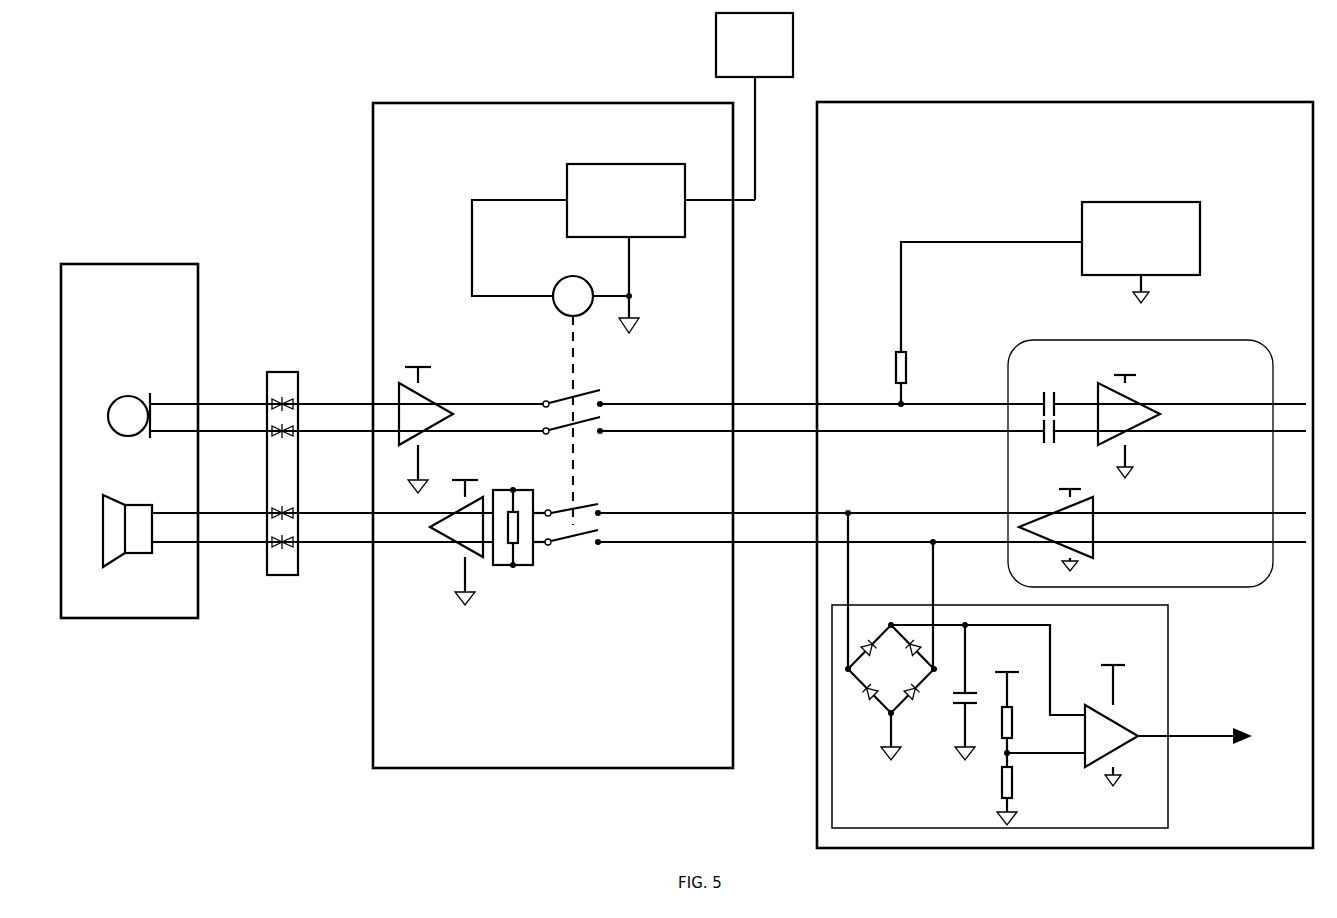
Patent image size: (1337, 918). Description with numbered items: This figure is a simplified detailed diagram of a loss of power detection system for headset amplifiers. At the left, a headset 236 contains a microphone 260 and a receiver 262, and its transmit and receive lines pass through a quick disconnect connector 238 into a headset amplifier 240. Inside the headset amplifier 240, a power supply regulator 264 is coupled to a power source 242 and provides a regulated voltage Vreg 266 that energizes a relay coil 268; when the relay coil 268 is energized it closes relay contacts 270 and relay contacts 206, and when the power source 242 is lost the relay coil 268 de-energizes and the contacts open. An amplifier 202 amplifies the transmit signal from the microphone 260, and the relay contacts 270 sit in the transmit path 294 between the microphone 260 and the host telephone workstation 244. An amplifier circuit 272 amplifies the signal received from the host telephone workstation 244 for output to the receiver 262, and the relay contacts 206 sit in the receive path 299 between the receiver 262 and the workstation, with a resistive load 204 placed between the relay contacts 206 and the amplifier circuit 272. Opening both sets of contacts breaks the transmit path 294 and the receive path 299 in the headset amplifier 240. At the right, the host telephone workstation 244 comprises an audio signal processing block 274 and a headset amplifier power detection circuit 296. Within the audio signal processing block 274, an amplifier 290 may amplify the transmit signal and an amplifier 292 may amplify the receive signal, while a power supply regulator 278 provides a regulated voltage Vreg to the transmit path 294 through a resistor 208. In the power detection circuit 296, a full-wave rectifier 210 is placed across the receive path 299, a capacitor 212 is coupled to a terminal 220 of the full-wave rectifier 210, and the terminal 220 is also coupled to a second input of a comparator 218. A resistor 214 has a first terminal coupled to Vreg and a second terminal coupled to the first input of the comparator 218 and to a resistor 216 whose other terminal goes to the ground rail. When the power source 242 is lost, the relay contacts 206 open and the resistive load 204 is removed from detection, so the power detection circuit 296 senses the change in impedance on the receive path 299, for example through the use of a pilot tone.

The headset 236 is at (129, 441).
The microphone 260 is at (141, 399).
The receiver 262 is at (140, 519).
The quick disconnect connector 238 is at (298, 445).
The headset amplifier 240 is at (553, 435).
The power source 242 is at (754, 106).
The power supply regulator 264 is at (661, 248).
The regulated voltage Vreg 266 is at (519, 238).
The relay coil 268 is at (585, 385).
The amplifier 202 is at (426, 422).
The amplifier circuit 272 is at (456, 534).
The resistive load 204 is at (522, 527).
The relay contacts 270 is at (587, 427).
The relay contacts 206 is at (583, 537).
The transmit path 294 is at (953, 406).
The receive path 299 is at (952, 515).
The host telephone workstation 244 is at (1065, 475).
The power supply regulator 278 is at (1050, 277).
The resistor 208 is at (922, 379).
The audio signal processing block 274 is at (1203, 338).
The amplifier 290 is at (1129, 420).
The amplifier 292 is at (1056, 523).
The terminal 220 is at (891, 625).
The full-wave rectifier 210 is at (965, 691).
The capacitor 212 is at (953, 703).
The resistor 214 is at (1000, 728).
The resistor 216 is at (1023, 796).
The comparator 218 is at (1169, 718).
The headset amplifier power detection circuit 296 is at (1170, 673).